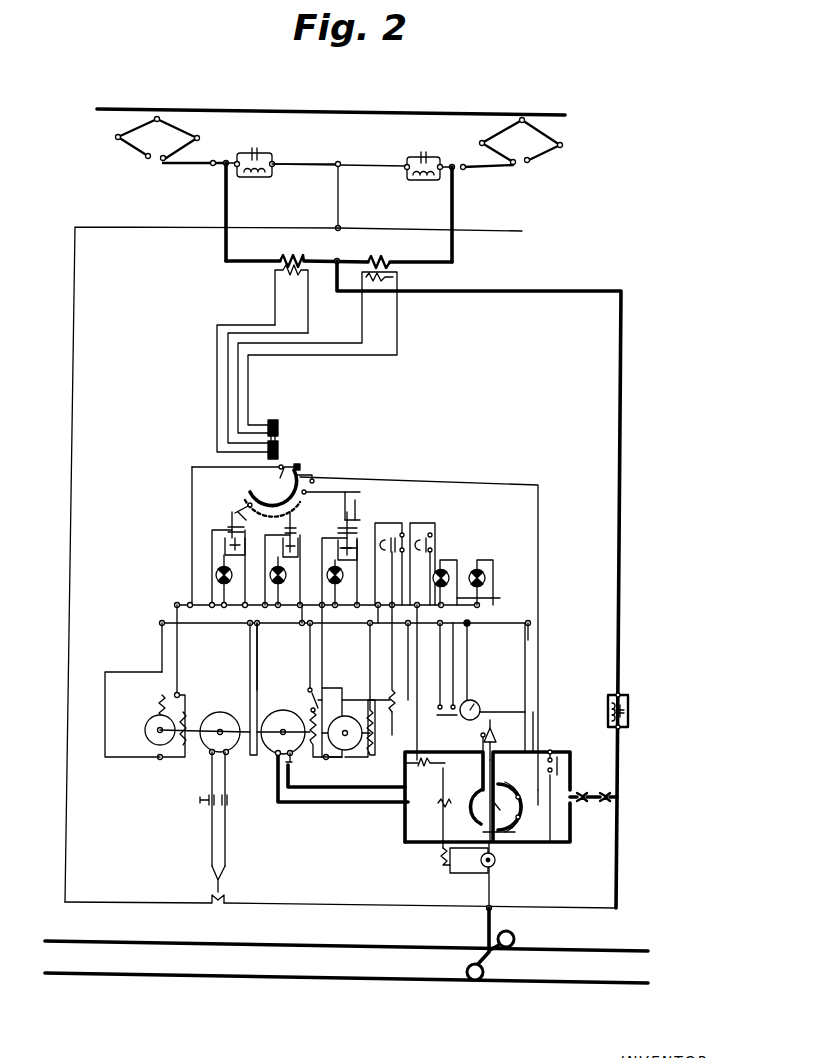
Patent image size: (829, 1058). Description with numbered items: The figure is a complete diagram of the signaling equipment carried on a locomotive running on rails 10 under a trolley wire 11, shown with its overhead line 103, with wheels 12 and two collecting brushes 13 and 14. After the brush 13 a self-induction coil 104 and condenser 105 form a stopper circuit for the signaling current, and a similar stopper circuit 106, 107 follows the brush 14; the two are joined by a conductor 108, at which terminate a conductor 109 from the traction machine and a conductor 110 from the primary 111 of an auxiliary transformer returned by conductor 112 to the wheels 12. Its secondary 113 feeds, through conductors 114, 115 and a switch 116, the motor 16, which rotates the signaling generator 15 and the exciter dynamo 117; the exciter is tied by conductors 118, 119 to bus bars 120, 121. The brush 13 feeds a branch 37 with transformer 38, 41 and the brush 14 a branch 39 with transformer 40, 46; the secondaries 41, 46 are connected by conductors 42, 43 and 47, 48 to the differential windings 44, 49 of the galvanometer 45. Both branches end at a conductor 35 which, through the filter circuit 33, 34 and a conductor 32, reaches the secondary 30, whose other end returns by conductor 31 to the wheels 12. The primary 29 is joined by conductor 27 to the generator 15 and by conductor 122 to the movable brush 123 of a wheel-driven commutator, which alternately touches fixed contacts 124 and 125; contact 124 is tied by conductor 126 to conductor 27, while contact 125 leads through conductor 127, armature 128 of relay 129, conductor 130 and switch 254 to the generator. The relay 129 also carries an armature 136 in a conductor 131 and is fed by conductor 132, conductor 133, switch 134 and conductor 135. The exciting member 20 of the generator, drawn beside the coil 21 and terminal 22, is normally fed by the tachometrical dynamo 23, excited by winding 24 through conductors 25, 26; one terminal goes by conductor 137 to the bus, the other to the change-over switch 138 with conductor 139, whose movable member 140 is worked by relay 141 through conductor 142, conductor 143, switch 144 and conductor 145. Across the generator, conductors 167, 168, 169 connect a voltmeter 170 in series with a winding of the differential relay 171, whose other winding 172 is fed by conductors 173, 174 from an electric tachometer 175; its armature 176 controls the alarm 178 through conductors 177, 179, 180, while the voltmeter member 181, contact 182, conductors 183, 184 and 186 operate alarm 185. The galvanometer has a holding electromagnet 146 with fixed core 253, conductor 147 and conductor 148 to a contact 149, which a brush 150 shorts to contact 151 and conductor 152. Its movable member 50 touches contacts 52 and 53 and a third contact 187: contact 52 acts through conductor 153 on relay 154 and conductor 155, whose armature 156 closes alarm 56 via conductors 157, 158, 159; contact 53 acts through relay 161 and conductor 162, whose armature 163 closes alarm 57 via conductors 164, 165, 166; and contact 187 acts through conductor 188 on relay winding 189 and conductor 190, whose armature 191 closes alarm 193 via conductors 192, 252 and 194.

The rails 10 is at (365, 953).
The trolley wire 11 is at (563, 114).
The locomotive wheels 12 is at (480, 980).
The collecting brush 13 is at (540, 148).
The collecting brush 14 is at (145, 143).
The signaling current generator 15 is at (280, 712).
The motor 16 is at (218, 712).
The exciting member 20 is at (310, 712).
The coil 21 is at (338, 688).
The terminal 22 is at (326, 760).
The tachometrical dynamo 23 is at (345, 750).
The winding 24 is at (376, 745).
The conductor 25 is at (375, 721).
The conductor 26 is at (366, 690).
The conductor 27 is at (312, 810).
The primary 29 is at (585, 805).
The secondary 30 is at (615, 805).
The conductor 31 is at (590, 909).
The conductor 32 is at (605, 795).
The filter circuit 33 is at (626, 697).
The filter circuit 34 is at (610, 700).
The conductor 35 is at (572, 291).
The circuit branch 37 is at (456, 240).
The transformer primary 38 is at (378, 258).
The circuit branch 39 is at (224, 250).
The transformer primary 40 is at (284, 257).
The secondary 41 is at (393, 277).
The conductor 42 is at (398, 324).
The conductor 43 is at (362, 341).
The differential winding 44 is at (280, 428).
The galvanometer 45 is at (273, 488).
The secondary 46 is at (292, 275).
The conductor 47 is at (272, 313).
The conductor 48 is at (309, 324).
The differential winding 49 is at (280, 449).
The movable member 50 is at (278, 478).
The fixed contact piece 52 is at (240, 512).
The contact piece 53 is at (318, 495).
The indicator or alarm 56 is at (215, 576).
The indicator or alarm 57 is at (282, 582).
The trolley wire 103 is at (395, 110).
The self-induction coil 104 is at (426, 181).
The condenser 105 is at (428, 157).
The stopper circuit element 106 is at (256, 177).
The stopper circuit element 107 is at (256, 153).
The conductor 108 is at (366, 165).
The conductor 109 is at (493, 230).
The conductor 110 is at (158, 230).
The primary 111 is at (212, 897).
The conductor 112 is at (290, 904).
The secondary 113 is at (226, 872).
The conductor 114 is at (227, 838).
The conductor 115 is at (211, 838).
The switch 116 is at (228, 802).
The exciter dynamo 117 is at (155, 722).
The conductor 118 is at (178, 690).
The conductor 119 is at (148, 672).
The bus bar 120 is at (215, 623).
The bus bar 121 is at (305, 625).
The conductor 122 is at (583, 790).
The movable brush 123 is at (483, 805).
The fixed contact piece 124 is at (522, 802).
The fixed contact piece 125 is at (491, 798).
The conductor 126 is at (496, 852).
The conductor 127 is at (432, 765).
The movable armature 128 is at (405, 760).
The relay 129 is at (440, 812).
The conductor 130 is at (340, 803).
The conductor 131 is at (552, 820).
The conductor 132 is at (410, 682).
The conductor 133 is at (429, 590).
The switch 134 is at (430, 543).
The conductor 135 is at (415, 523).
The armature 136 is at (558, 760).
The conductor 137 is at (315, 646).
The change-over switch 138 is at (313, 688).
The conductor 139 is at (308, 655).
The movable member 140 is at (342, 723).
The relay 141 is at (395, 712).
The conductor 142 is at (388, 658).
The conductor 143 is at (395, 578).
The switch 144 is at (393, 552).
The conductor 145 is at (360, 580).
The holding electromagnet 146 is at (301, 467).
The conductor 147 is at (192, 492).
The conductor 148 is at (498, 482).
The fixed contact piece 149 is at (477, 832).
The brush 150 is at (512, 825).
The contact piece 151 is at (492, 765).
The conductor 152 is at (534, 718).
The conductor 153 is at (242, 521).
The relay 154 is at (230, 530).
The conductor 155 is at (212, 572).
The armature 156 is at (225, 545).
The conductor 157 is at (188, 605).
The conductor 158 is at (235, 562).
The conductor 159 is at (245, 625).
The relay 161 is at (282, 530).
The conductor 162 is at (290, 565).
The armature 163 is at (336, 552).
The conductor 164 is at (270, 580).
The conductor 165 is at (265, 548).
The conductor 166 is at (268, 625).
The conductor 167 is at (488, 727).
The conductor 168 is at (455, 790).
The conductor 169 is at (432, 842).
The voltmeter 170 is at (502, 702).
The differential relay 171 is at (440, 805).
The winding 172 is at (440, 862).
The conductor 173 is at (455, 873).
The conductor 174 is at (478, 889).
The electric tachometer 175 is at (493, 866).
The movable armature 176 is at (443, 830).
The conductor 177 is at (450, 598).
The indicator or alarm 178 is at (446, 570).
The conductor 179 is at (470, 598).
The conductor 180 is at (456, 669).
The movable member 181 is at (486, 735).
The fixed contact piece 182 is at (472, 700).
The conductor 183 is at (526, 700).
The conductor 184 is at (511, 644).
The alarm indicator 185 is at (485, 578).
The conductor 186 is at (500, 598).
The third contact piece 187 is at (360, 493).
The conductor 188 is at (358, 518).
The relay winding 189 is at (380, 523).
The conductor 190 is at (322, 580).
The movable armature 191 is at (337, 548).
The conductor 192 is at (365, 615).
The indicator or alarm 193 is at (342, 582).
The conductor 194 is at (347, 527).
The conductor 252 is at (338, 532).
The fixed core 253 is at (255, 496).
The switch 254 is at (286, 768).